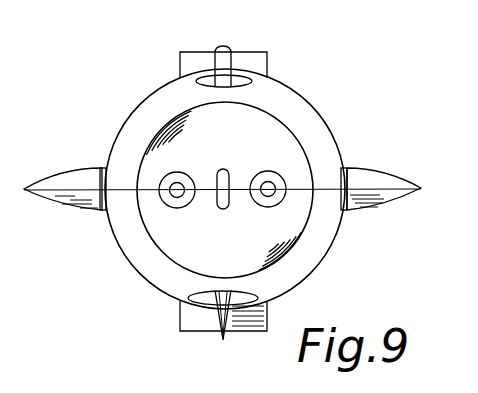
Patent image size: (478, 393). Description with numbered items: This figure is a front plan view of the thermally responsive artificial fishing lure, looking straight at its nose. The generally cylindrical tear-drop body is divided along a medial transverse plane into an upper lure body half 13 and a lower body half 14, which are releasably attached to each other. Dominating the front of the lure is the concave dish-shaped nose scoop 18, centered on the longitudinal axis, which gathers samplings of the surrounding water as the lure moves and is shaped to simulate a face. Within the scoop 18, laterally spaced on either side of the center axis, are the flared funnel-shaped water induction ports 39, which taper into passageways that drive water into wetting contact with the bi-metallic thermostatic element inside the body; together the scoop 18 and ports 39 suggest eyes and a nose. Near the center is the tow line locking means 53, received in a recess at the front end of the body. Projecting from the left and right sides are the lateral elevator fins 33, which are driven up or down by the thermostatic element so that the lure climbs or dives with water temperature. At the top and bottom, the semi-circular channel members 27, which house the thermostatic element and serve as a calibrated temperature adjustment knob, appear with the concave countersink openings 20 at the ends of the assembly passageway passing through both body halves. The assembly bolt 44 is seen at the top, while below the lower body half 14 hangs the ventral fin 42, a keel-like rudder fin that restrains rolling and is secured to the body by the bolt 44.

The upper lure body half 13 is at (124, 118).
The lower body half 14 is at (121, 251).
The nose scoop 18 is at (234, 254).
The concave countersink opening 20 is at (207, 81).
The semi-circular channel member 27 is at (268, 57).
The lateral elevator fin 33 is at (78, 167).
The funnel-shaped water induction port 39 is at (184, 204).
The ventral fin 42 is at (227, 334).
The assembly bolt 44 is at (223, 46).
The tow line locking means 53 is at (225, 141).